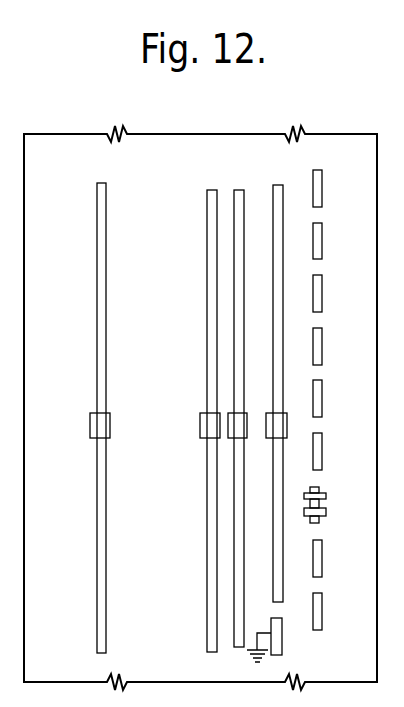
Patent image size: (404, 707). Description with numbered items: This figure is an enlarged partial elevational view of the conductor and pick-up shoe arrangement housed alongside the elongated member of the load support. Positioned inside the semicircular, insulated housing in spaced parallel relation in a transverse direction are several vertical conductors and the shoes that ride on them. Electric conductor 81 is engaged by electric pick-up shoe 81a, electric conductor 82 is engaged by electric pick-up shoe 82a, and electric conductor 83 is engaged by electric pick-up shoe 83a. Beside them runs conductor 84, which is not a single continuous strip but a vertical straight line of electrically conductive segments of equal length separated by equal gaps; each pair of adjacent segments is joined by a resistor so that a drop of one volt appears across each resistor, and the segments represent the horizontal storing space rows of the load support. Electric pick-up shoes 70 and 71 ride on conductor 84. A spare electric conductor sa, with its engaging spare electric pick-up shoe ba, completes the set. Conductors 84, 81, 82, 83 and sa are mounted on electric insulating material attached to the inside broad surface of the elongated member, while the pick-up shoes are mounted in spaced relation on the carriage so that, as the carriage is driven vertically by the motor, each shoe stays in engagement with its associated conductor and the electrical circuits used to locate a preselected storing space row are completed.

The electric conductor 81 is at (97, 355).
The electric pick-up shoe 81a is at (90, 422).
The electric conductor 82 is at (207, 355).
The electric pick-up shoe 82a is at (200, 422).
The electric conductor 83 is at (244, 353).
The electric pick-up shoe 83a is at (228, 440).
The conductor 84 is at (357, 342).
The electric pick-up shoe 70 is at (326, 495).
The electric pick-up shoe 71 is at (326, 512).
The spare electric conductor sa is at (273, 272).
The spare electric pick-up shoe ba is at (266, 422).